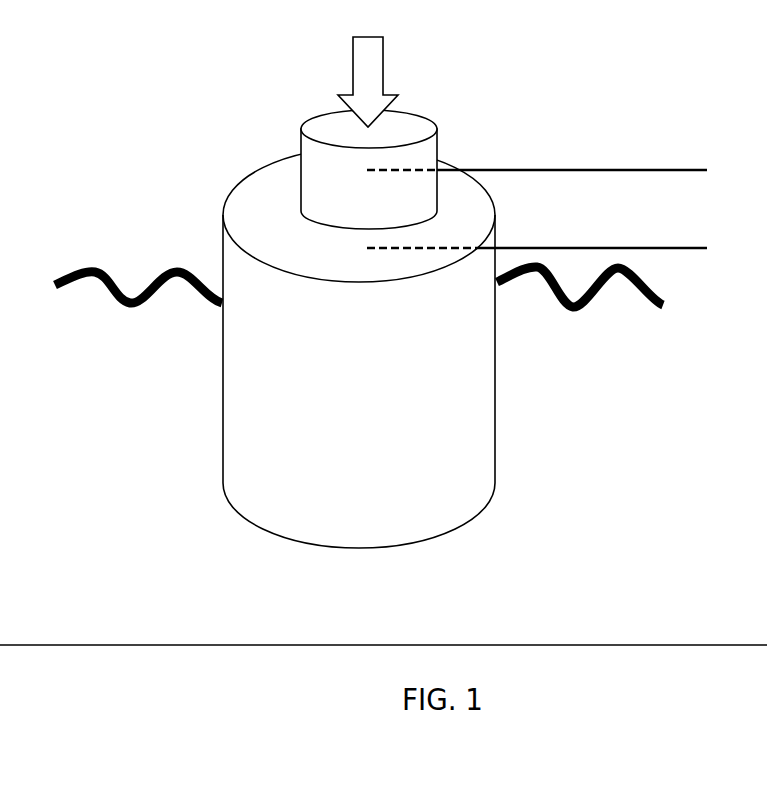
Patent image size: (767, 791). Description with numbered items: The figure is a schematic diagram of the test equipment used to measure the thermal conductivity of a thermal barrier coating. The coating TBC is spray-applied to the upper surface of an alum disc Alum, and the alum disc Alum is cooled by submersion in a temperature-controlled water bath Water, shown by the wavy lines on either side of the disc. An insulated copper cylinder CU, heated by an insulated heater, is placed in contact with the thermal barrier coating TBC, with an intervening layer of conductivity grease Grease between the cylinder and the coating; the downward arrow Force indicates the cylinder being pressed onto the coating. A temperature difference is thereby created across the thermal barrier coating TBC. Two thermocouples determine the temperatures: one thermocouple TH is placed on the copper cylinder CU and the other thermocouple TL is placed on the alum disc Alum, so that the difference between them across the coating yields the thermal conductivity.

The alum disc Alum is at (359, 348).
The thermal barrier coating TBC is at (250, 215).
The copper cylinder CU is at (369, 169).
The thermocouple on copper cylinder TH is at (554, 163).
The thermocouple on alum disc TL is at (553, 238).
The contact load Force is at (368, 82).
The conductivity grease Grease is at (300, 207).
The temperature-controlled water bath Water is at (359, 307).